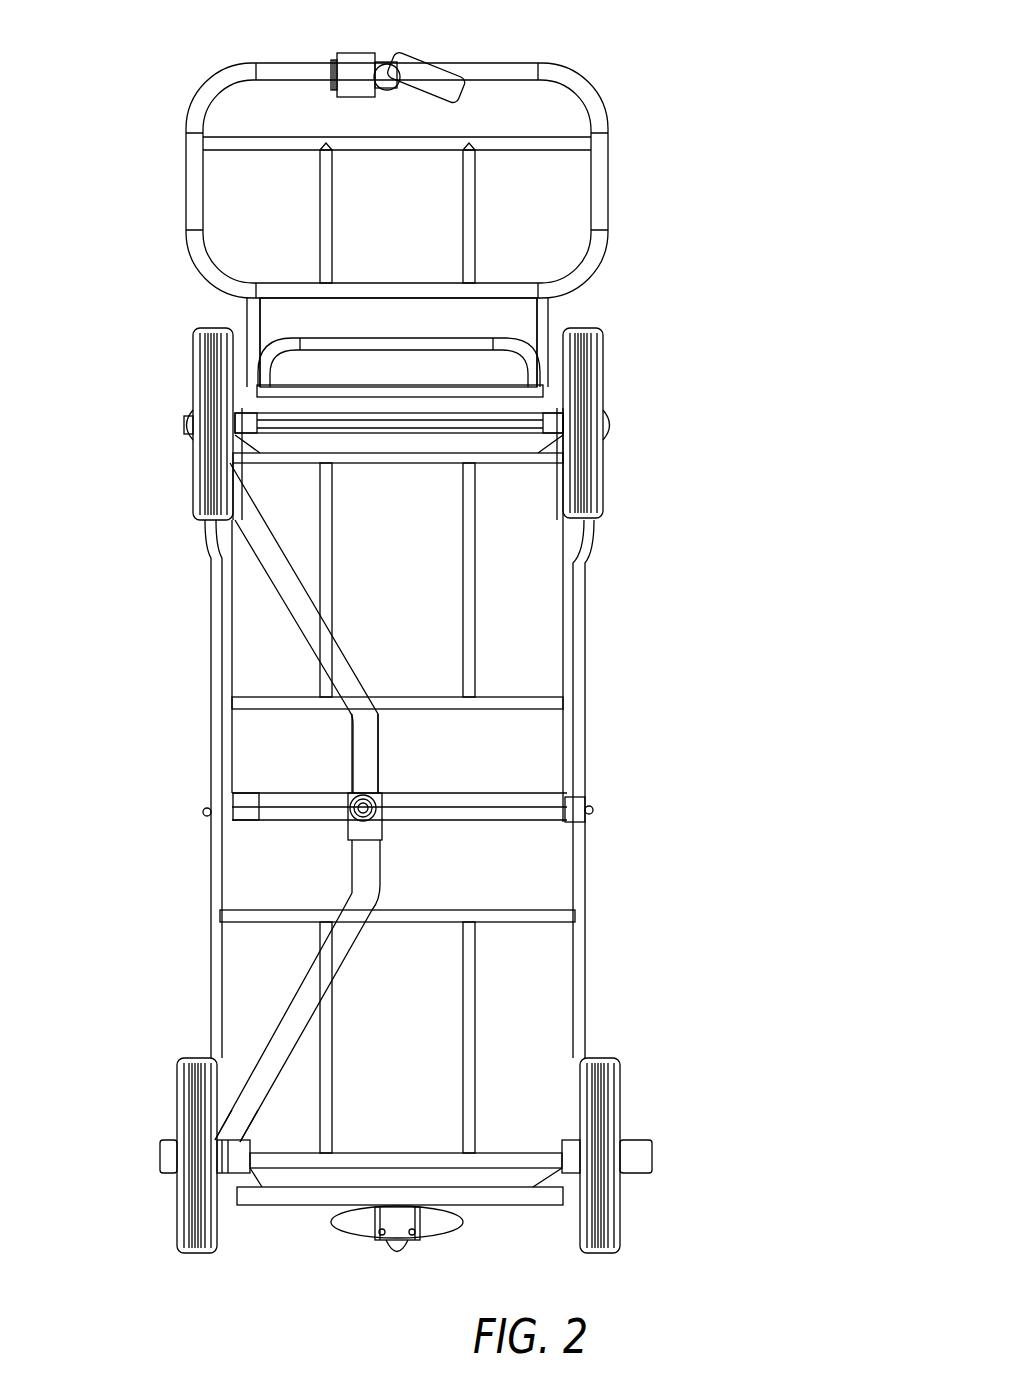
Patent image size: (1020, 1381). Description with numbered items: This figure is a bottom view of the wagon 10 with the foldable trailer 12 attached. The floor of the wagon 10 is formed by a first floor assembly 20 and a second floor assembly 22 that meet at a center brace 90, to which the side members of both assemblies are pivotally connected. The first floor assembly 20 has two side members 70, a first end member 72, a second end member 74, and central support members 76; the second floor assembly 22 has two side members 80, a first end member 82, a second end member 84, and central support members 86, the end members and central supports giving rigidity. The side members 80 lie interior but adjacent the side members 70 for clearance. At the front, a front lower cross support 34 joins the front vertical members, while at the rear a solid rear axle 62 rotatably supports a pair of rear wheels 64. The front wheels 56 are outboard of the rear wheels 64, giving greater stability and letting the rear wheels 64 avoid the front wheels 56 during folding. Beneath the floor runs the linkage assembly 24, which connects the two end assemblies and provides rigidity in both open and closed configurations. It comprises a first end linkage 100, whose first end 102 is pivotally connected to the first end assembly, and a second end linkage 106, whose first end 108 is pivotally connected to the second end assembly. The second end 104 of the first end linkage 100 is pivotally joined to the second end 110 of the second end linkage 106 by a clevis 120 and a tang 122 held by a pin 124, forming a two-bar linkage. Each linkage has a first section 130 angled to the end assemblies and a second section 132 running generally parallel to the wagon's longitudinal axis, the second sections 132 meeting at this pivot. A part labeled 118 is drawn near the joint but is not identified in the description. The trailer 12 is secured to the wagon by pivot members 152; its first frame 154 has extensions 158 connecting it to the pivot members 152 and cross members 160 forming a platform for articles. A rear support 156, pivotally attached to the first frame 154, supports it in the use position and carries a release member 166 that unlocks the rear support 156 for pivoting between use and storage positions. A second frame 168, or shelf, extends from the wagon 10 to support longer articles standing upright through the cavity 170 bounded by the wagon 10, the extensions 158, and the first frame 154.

The wagon 10 is at (708, 1083).
The foldable trailer 12 is at (603, 57).
The first floor assembly 20 is at (577, 1030).
The second floor assembly 22 is at (227, 662).
The linkage assembly 24 is at (347, 900).
The front lower cross support 34 is at (527, 1198).
The front wheels 56 is at (615, 1078).
The rear axle 62 is at (562, 478).
The rear wheels 64 is at (200, 390).
The side members 70 is at (577, 942).
The first end member 72 is at (475, 1160).
The second end member 74 is at (548, 918).
The central support members 76 is at (470, 970).
The side members 80 is at (223, 643).
The first end member 82 is at (210, 516).
The second end member 84 is at (212, 810).
The central support members 86 is at (470, 607).
The center brace 90 is at (363, 862).
The first end linkage 100 is at (240, 1113).
The first end 102 is at (173, 1160).
The second end 104 is at (363, 890).
The second end linkage 106 is at (317, 645).
The first end 108 is at (275, 568).
The second end 110 is at (363, 738).
The bracket 118 is at (505, 810).
The clevis 120 is at (382, 832).
The tang 122 is at (374, 792).
The pin 124 is at (272, 808).
The first section 130 is at (293, 597).
The second section 132 is at (363, 765).
The pivot member 152 is at (563, 392).
The first frame 154 is at (600, 176).
The rear support 156 is at (353, 72).
The extensions 158 is at (265, 313).
The cross members 160 is at (253, 147).
The release member 166 is at (447, 58).
The second frame 168 is at (510, 350).
The cavity 170 is at (203, 332).